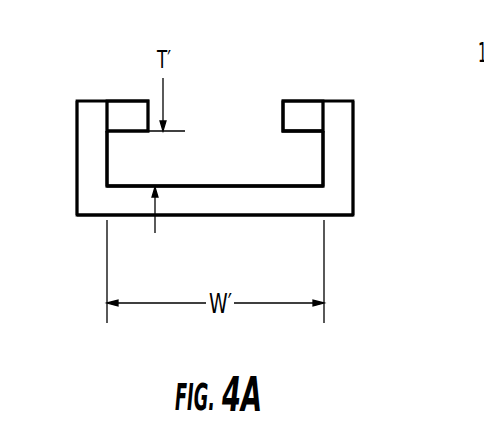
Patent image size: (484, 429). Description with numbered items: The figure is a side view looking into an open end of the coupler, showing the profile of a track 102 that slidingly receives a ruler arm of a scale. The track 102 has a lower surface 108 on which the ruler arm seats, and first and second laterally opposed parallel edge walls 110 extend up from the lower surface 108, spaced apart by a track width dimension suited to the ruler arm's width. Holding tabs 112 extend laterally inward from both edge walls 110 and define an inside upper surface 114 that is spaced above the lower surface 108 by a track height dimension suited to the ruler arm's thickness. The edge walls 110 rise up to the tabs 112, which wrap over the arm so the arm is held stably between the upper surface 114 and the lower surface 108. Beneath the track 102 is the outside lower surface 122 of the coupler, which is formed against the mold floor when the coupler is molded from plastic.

The track 102 is at (392, 161).
The lower surface 108 is at (206, 178).
The edge walls 110 is at (104, 150).
The holding tabs 112 is at (120, 110).
The upper surface 114 is at (297, 142).
The outside lower surface 122 is at (221, 226).